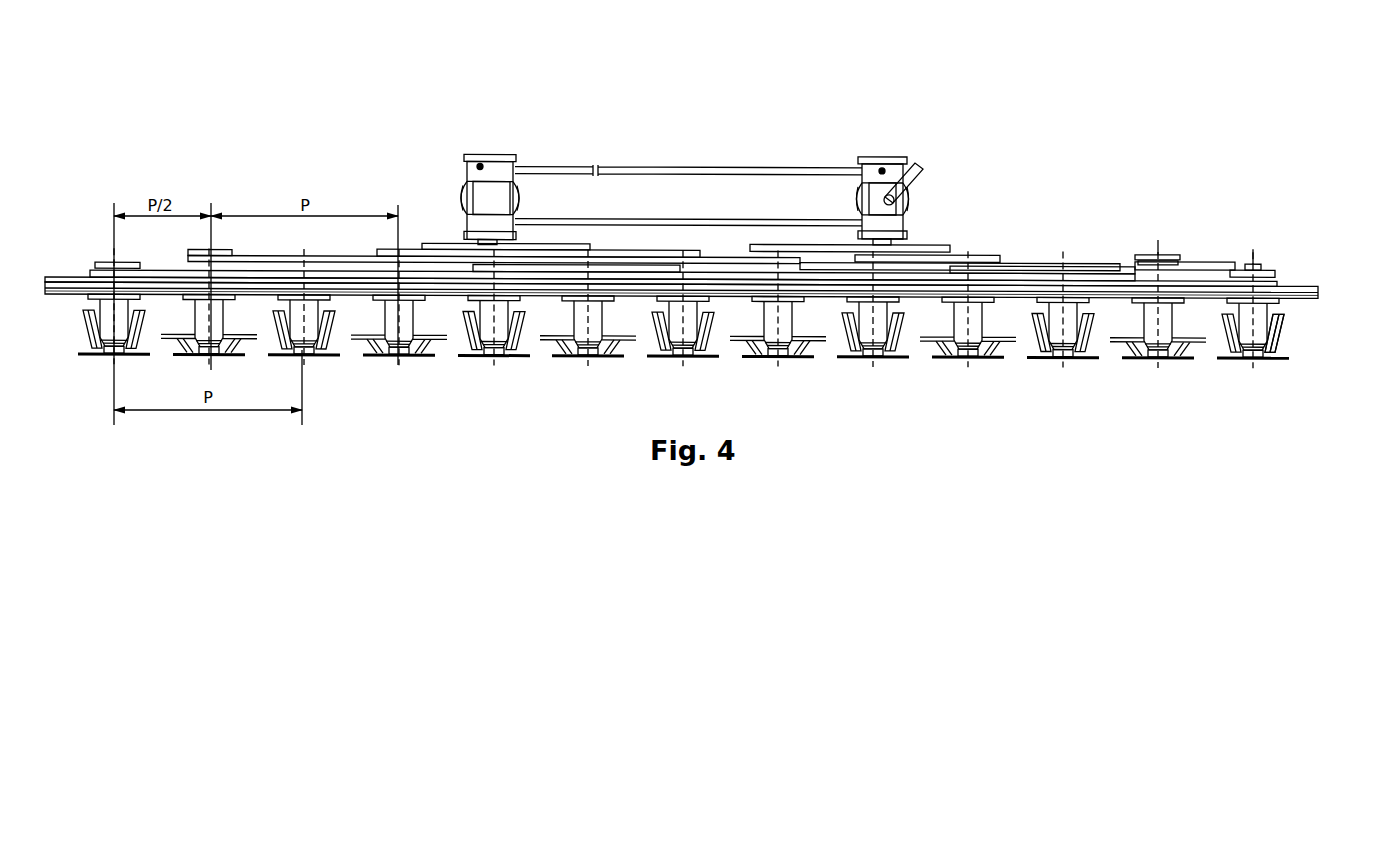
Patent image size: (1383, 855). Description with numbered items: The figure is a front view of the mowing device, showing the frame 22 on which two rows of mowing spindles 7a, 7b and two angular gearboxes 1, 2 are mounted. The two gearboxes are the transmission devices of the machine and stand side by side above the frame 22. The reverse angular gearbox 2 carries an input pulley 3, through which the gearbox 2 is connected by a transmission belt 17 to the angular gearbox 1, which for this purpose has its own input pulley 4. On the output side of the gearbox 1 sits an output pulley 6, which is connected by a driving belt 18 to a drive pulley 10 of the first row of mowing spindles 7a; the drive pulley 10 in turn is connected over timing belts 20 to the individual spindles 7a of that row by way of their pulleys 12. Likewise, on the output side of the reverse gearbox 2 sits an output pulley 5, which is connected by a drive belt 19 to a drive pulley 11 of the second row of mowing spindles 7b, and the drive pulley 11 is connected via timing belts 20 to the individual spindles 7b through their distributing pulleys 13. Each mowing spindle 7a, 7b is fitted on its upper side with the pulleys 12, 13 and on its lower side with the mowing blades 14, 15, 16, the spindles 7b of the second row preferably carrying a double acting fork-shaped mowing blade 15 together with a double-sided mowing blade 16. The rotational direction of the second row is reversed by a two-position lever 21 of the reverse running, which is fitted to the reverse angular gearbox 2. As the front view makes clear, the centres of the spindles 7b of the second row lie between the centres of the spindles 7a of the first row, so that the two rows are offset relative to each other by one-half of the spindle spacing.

The angular gearbox 1 is at (480, 163).
The reverse angular gearbox 2 is at (884, 168).
The input pulley of gearbox 2 3 is at (845, 141).
The input pulley of gearbox 1 4 is at (435, 141).
The output pulley of gearbox 2 5 is at (1042, 173).
The output pulley of gearbox 1 6 is at (425, 159).
The mowing spindles of the first row 7a is at (920, 341).
The mowing spindles of the second row 7b is at (825, 341).
The drive pulley of the first row 10 is at (580, 171).
The drive pulley of the second row 11 is at (810, 161).
The pulleys of the first row 12 is at (1241, 263).
The distributing pulleys of the second row 13 is at (1172, 250).
The mowing blade 14 is at (1318, 375).
The double acting fork-shaped mowing blade 15 is at (1234, 387).
The double-sided mowing blade 16 is at (1121, 342).
The transmission belt 17 is at (688, 122).
The driving belt 18 is at (538, 162).
The drive belt 19 is at (921, 170).
The timing belts 20 is at (1015, 258).
The two-position lever of the reverse running 21 is at (927, 167).
The frame 22 is at (1296, 287).